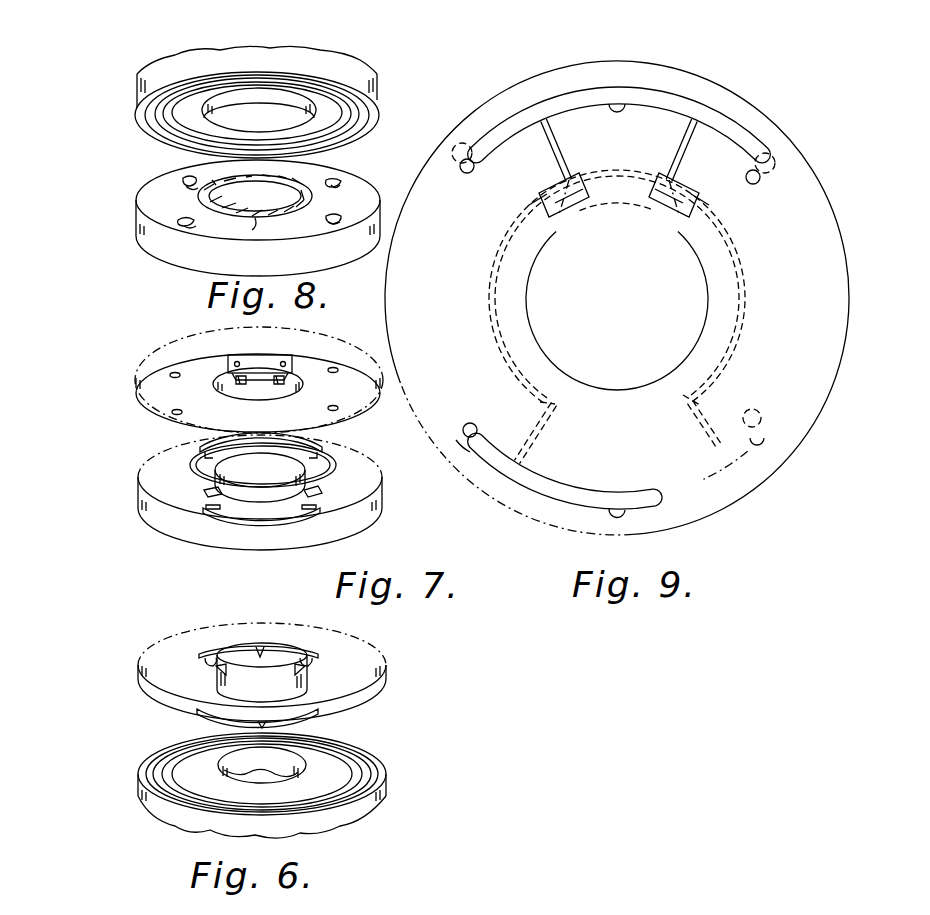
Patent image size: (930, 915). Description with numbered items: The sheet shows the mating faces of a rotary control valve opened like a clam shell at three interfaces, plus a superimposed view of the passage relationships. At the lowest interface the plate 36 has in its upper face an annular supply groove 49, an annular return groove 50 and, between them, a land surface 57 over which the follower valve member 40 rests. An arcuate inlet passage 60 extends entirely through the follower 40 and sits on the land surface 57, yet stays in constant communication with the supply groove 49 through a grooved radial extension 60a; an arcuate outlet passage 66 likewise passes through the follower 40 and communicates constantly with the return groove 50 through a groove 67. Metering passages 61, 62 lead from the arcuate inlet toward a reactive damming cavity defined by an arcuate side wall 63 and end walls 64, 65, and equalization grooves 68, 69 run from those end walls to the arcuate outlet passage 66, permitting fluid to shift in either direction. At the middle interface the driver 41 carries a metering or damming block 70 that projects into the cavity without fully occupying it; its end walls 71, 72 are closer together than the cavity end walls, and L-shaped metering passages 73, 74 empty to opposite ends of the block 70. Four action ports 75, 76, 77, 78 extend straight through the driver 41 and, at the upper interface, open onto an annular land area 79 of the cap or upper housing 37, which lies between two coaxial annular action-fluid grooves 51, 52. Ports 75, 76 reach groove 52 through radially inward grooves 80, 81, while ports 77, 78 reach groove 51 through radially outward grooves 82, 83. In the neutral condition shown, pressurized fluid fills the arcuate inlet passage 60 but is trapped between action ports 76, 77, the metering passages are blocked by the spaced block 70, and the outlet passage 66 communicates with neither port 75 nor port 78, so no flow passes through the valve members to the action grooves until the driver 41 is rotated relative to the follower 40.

In FIG. 6, the plate 36 is at (150, 805).
In FIG. 8, the cap or upper housing 37 is at (138, 90).
In FIG. 7, the follower valve member 40 is at (146, 511).
In FIG. 6, the follower valve member 40 is at (358, 642).
In FIG. 8, the driver 41 is at (141, 229).
In FIG. 7, the driver 41 is at (140, 381).
In FIG. 6, the annular valve facing supply groove 49 is at (182, 772).
In FIG. 6, the annular return groove 50 is at (172, 792).
In FIG. 8, the annular action-fluid passage 51 is at (158, 114).
In FIG. 8, the annular action-fluid passage 52 is at (185, 104).
In FIG. 6, the land surface 57 is at (190, 794).
In FIG. 7, the arcuate inlet passage 60 is at (263, 515).
In FIG. 6, the arcuate inlet passage 60 is at (250, 645).
In FIG. 9, the arcuate inlet passage 60 is at (565, 100).
In FIG. 6, the grooved radial extension 60a is at (264, 652).
In FIG. 9, the grooved radial extension 60a is at (609, 110).
In FIG. 7, the metering passage 61 is at (212, 510).
In FIG. 6, the metering passage 61 is at (207, 645).
In FIG. 9, the metering passage 61 is at (552, 145).
In FIG. 7, the metering passage 62 is at (305, 510).
In FIG. 6, the metering passage 62 is at (305, 657).
In FIG. 9, the metering passage 62 is at (680, 148).
In FIG. 7, the side wall 63 is at (265, 500).
In FIG. 6, the side wall 63 is at (288, 705).
In FIG. 9, the side wall 63 is at (617, 310).
In FIG. 7, the end wall 64 is at (206, 493).
In FIG. 6, the end wall 64 is at (216, 672).
In FIG. 9, the end wall 64 is at (540, 200).
In FIG. 7, the end wall 65 is at (318, 489).
In FIG. 6, the end wall 65 is at (303, 670).
In FIG. 9, the end wall 65 is at (700, 205).
In FIG. 7, the arcuate outlet passage 66 is at (323, 446).
In FIG. 6, the arcuate outlet passage 66 is at (205, 717).
In FIG. 9, the arcuate outlet passage 66 is at (656, 486).
In FIG. 6, the groove 67 is at (315, 720).
In FIG. 9, the groove 67 is at (622, 512).
In FIG. 7, the equalization groove 68 is at (196, 450).
In FIG. 9, the equalization groove 68 is at (490, 318).
In FIG. 7, the equalization groove 69 is at (335, 468).
In FIG. 9, the equalization groove 69 is at (742, 320).
In FIG. 7, the metering block or damming block 70 is at (278, 355).
In FIG. 9, the metering block or damming block 70 is at (618, 214).
In FIG. 7, the end wall 71 is at (233, 361).
In FIG. 9, the end wall 71 is at (552, 226).
In FIG. 7, the end wall 72 is at (287, 361).
In FIG. 9, the end wall 72 is at (688, 222).
In FIG. 7, the metering passage 73 is at (243, 385).
In FIG. 9, the metering passage 73 is at (572, 212).
In FIG. 7, the metering passage 74 is at (276, 385).
In FIG. 9, the metering passage 74 is at (668, 214).
In FIG. 8, the action port 75 is at (338, 186).
In FIG. 7, the action port 75 is at (337, 411).
In FIG. 9, the action port 75 is at (762, 436).
In FIG. 8, the action port 76 is at (337, 215).
In FIG. 7, the action port 76 is at (336, 368).
In FIG. 9, the action port 76 is at (770, 153).
In FIG. 8, the action port 77 is at (181, 219).
In FIG. 7, the action port 77 is at (172, 372).
In FIG. 9, the action port 77 is at (472, 171).
In FIG. 8, the action port 78 is at (183, 178).
In FIG. 7, the action port 78 is at (172, 414).
In FIG. 9, the action port 78 is at (468, 423).
In FIG. 8, the annular land area 79 is at (170, 127).
In FIG. 8, the radially inward groove 80 is at (330, 180).
In FIG. 9, the radially inward groove 80 is at (755, 409).
In FIG. 8, the radially inward groove 81 is at (342, 222).
In FIG. 9, the radially inward groove 81 is at (758, 182).
In FIG. 8, the radially outward groove 82 is at (192, 226).
In FIG. 9, the radially outward groove 82 is at (457, 143).
In FIG. 8, the radially outward groove 83 is at (197, 191).
In FIG. 9, the radially outward groove 83 is at (462, 452).